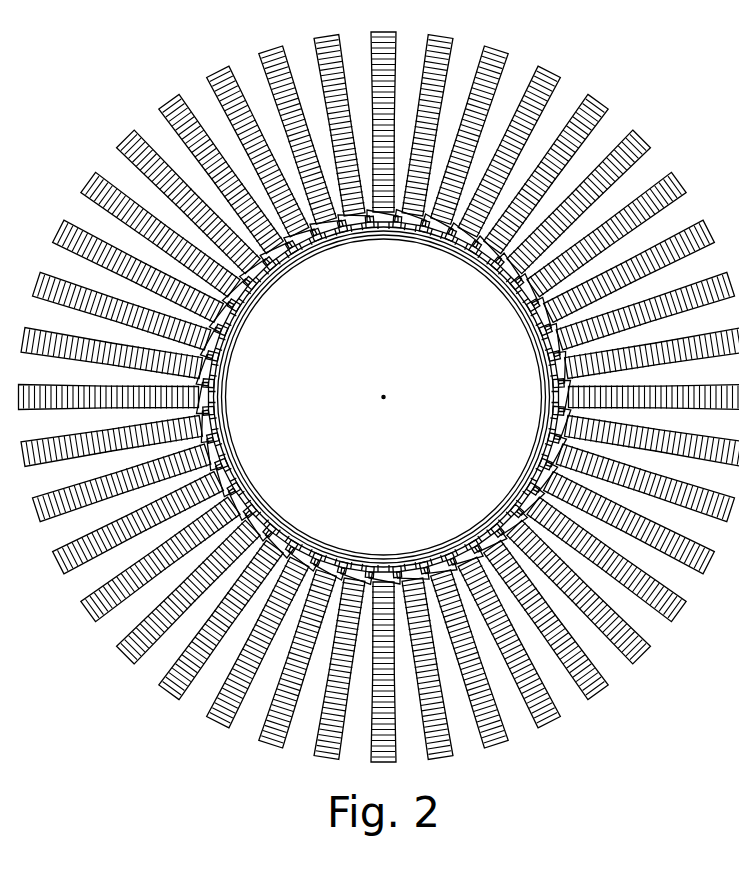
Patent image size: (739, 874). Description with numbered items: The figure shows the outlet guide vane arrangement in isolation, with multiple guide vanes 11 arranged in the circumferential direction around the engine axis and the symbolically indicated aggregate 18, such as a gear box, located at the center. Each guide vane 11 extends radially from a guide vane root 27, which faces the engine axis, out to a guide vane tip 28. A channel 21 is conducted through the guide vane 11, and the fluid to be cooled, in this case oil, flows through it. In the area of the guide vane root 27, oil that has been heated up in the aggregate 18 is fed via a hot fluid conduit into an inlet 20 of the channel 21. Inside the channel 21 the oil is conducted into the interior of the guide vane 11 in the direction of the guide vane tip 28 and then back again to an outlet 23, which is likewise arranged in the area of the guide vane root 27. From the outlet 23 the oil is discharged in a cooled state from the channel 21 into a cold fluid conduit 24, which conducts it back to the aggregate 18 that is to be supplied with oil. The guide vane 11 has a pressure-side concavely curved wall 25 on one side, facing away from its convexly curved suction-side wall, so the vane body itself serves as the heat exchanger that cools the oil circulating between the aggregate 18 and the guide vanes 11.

The guide vane 11 is at (379, 389).
The aggregate 18 is at (383, 397).
The inlet 20 is at (448, 234).
The channel 21 is at (347, 232).
The outlet 23 is at (468, 236).
The cold fluid conduit 24 is at (227, 385).
The pressure-side concavely curved wall 25 is at (228, 410).
The guide vane root 27 is at (302, 251).
The guide vane tip 28 is at (593, 98).